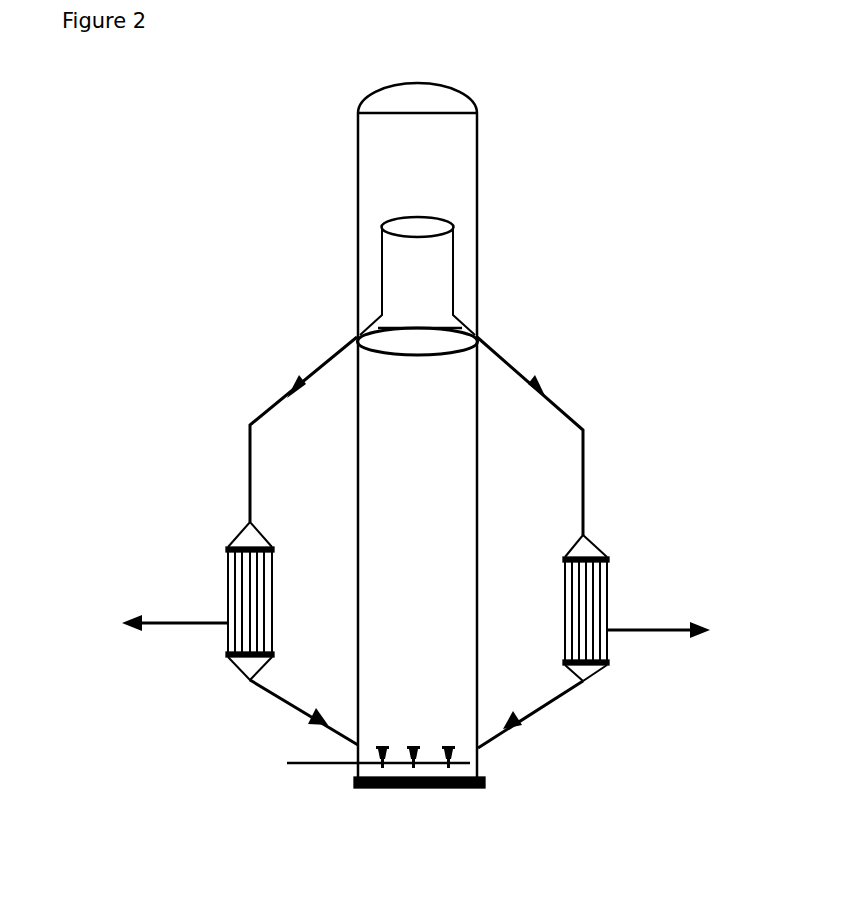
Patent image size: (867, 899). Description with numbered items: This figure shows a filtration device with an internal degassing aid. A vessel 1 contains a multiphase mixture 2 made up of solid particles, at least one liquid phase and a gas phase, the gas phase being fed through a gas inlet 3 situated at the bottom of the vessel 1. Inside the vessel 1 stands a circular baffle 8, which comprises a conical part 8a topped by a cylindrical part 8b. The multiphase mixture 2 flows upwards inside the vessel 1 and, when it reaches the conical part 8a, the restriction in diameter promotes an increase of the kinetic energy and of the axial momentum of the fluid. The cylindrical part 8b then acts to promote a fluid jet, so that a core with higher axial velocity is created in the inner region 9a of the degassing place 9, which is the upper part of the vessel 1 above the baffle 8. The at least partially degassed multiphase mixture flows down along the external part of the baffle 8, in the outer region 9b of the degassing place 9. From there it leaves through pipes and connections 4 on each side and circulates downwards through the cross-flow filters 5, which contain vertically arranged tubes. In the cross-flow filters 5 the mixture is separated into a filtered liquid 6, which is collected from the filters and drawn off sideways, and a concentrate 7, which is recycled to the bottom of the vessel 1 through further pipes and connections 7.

The vessel 1 is at (475, 138).
The multiphase mixture 2 is at (417, 560).
The gas inlet 3 is at (364, 759).
The pipes and connections 4 is at (273, 403).
The cross-flow filters 5 is at (228, 585).
The filtered liquid 6 is at (417, 626).
The concentrate 7 is at (307, 713).
The circular baffle 8 is at (382, 267).
The conical part 8a is at (417, 272).
The cylindrical part 8b is at (418, 341).
The degassing place 9 is at (452, 183).
The inner region 9a is at (410, 160).
The outer region 9b is at (458, 279).